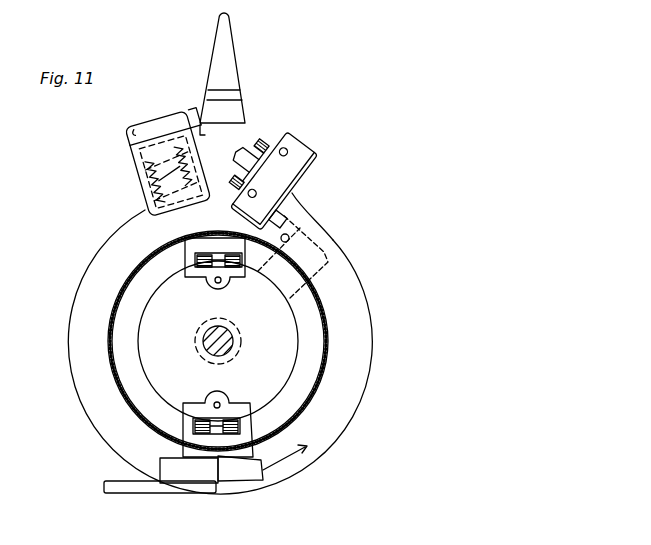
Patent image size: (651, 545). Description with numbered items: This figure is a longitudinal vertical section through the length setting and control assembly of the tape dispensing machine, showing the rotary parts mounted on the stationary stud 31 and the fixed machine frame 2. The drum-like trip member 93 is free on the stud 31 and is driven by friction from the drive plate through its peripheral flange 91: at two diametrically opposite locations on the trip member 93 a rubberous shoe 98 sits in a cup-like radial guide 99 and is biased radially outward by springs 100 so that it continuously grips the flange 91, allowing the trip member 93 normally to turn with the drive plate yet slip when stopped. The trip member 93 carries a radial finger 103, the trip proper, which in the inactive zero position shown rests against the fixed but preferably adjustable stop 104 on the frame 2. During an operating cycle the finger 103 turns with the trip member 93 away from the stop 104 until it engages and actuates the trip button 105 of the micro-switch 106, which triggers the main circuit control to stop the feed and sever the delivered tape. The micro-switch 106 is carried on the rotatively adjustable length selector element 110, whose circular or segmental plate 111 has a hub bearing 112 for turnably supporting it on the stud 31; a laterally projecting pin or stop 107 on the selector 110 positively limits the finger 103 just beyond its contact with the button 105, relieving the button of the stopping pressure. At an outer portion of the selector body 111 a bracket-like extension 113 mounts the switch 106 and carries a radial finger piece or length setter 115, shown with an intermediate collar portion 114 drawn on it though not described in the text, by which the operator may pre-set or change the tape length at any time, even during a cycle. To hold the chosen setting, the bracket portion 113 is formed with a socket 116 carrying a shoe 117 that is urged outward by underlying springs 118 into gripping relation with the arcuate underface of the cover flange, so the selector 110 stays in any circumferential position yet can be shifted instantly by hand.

The machine frame 2 is at (106, 488).
The stud 31 is at (242, 344).
The peripheral flange 91 is at (122, 291).
The trip member 93 is at (276, 374).
The rubberous shoe 98 is at (203, 251).
The cup-like radial guide 99 is at (197, 272).
The springs 100 is at (232, 257).
The radial finger 103 is at (250, 470).
The stop 104 is at (187, 468).
The trip button 105 is at (290, 236).
The micro-switch 106 is at (297, 167).
The stop pin 107 is at (290, 241).
The length selector element 110 is at (358, 281).
The selector plate 111 is at (353, 318).
The hub bearing 112 is at (206, 352).
The bracket-like extension 113 is at (262, 140).
The collar 114 is at (221, 95).
The length setter 115 is at (226, 28).
The socket 116 is at (146, 169).
The shoe 117 is at (140, 127).
The springs 118 is at (156, 197).